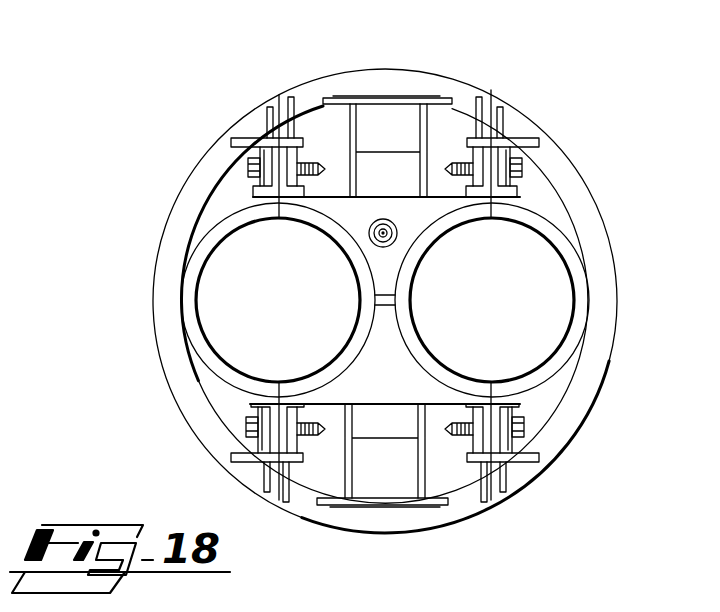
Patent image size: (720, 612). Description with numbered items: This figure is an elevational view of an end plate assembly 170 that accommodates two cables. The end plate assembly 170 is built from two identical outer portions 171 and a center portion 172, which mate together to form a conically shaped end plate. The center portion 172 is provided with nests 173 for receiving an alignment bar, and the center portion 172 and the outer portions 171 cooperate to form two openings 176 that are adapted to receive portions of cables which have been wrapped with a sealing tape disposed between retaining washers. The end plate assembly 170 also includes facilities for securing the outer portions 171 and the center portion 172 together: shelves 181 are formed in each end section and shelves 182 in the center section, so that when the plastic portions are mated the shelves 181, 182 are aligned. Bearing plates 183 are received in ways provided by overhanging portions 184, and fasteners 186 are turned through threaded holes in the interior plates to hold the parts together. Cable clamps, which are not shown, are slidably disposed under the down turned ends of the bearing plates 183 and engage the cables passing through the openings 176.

The end plate assembly 170 is at (553, 134).
The outer portion 171 is at (556, 206).
The center portion 172 is at (422, 72).
The nest 173 is at (348, 80).
The opening 176 is at (550, 292).
The shelf 181 is at (513, 197).
The shelf 182 is at (487, 160).
The bearing plate 183 is at (256, 186).
The overhanging portion 184 is at (258, 141).
The fastener 186 is at (248, 163).